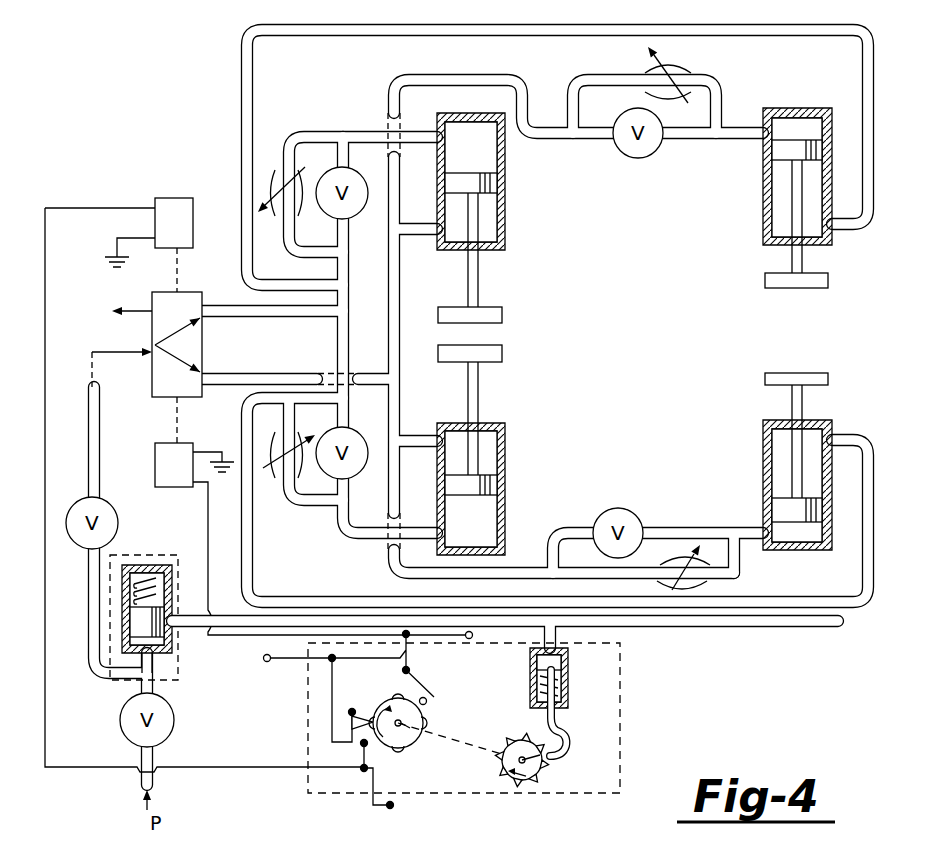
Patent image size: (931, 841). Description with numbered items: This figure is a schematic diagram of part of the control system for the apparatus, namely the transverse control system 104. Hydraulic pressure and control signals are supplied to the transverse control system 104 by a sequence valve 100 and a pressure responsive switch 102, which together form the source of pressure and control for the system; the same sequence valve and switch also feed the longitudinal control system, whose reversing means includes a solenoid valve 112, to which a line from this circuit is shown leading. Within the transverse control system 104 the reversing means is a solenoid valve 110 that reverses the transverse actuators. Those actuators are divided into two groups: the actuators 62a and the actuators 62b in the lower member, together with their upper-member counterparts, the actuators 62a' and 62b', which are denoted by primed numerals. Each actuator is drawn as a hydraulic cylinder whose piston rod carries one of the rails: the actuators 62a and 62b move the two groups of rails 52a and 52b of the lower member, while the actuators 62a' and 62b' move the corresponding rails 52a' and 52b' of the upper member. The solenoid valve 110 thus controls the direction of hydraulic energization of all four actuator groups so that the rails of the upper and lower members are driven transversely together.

The transverse control system 104 is at (212, 131).
The solenoid valve 110 is at (208, 350).
The sequence valve 100 is at (139, 548).
The pressure responsive switch 102 is at (625, 707).
The solenoid valve 112 is at (531, 644).
The actuators 62a is at (508, 458).
The actuators 62a' is at (502, 210).
The actuators 62b is at (816, 467).
The actuators 62b' is at (773, 190).
The rails 52a is at (507, 356).
The rails 52a' is at (510, 304).
The rails 52b is at (763, 374).
The rails 52b' is at (762, 289).